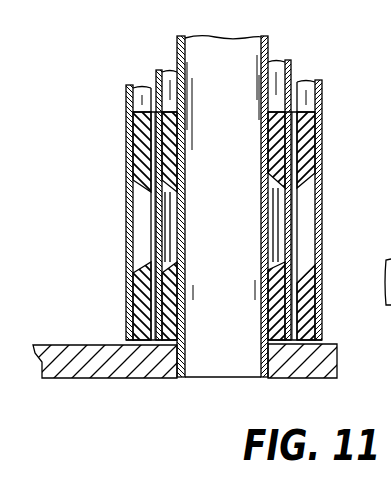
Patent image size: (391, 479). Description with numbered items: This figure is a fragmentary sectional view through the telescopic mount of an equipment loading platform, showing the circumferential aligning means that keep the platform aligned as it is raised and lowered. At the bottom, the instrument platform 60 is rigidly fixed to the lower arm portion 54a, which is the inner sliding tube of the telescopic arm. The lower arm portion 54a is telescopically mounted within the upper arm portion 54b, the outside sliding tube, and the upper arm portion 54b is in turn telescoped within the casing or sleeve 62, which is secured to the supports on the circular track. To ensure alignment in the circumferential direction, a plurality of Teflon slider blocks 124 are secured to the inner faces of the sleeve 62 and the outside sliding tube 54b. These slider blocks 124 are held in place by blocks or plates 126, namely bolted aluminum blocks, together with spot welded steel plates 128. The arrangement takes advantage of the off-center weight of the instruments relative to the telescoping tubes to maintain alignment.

The lower arm portion 54a is at (177, 52).
The upper arm portion 54b is at (158, 101).
The casing or sleeve 62 is at (126, 200).
The Teflon slider blocks 124 is at (308, 143).
The blocks or plates 126 is at (312, 212).
The spot welded steel plates 128 is at (263, 214).
The instrument platform 60 is at (68, 386).